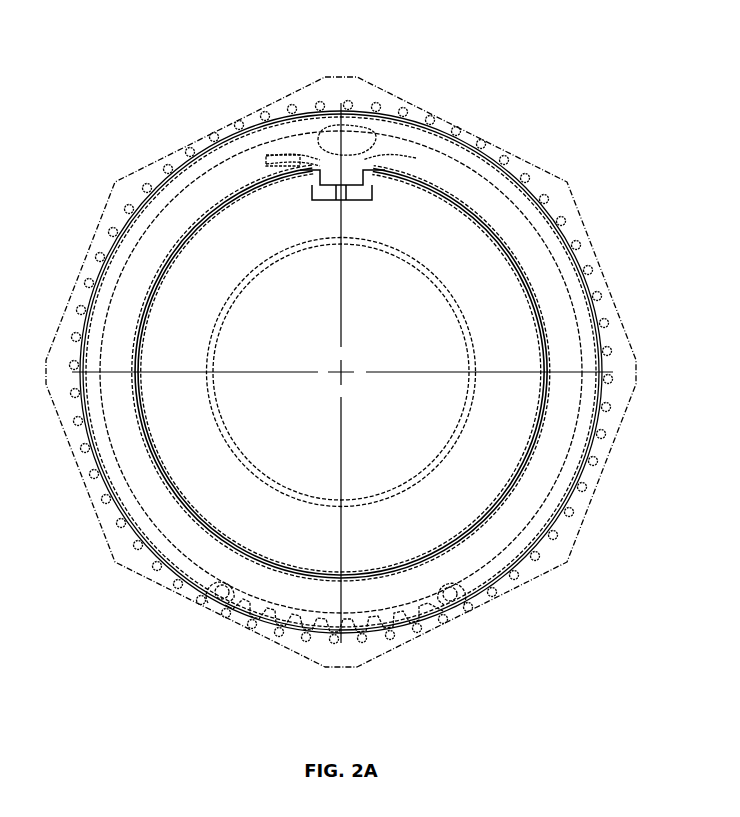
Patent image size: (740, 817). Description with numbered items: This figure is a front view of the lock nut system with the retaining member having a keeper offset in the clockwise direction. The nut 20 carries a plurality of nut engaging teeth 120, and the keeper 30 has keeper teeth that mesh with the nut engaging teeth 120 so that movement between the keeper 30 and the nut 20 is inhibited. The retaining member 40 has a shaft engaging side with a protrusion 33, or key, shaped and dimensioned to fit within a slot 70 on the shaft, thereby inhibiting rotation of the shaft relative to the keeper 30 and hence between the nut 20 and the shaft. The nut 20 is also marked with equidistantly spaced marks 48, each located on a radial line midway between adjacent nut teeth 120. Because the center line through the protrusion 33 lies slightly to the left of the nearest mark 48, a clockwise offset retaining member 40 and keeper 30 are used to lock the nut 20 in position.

The nut 20 is at (546, 156).
The keeper 30 is at (412, 152).
The protrusion 33 is at (361, 160).
The retaining member 40 is at (550, 219).
The marks 48 is at (346, 91).
The slot 70 is at (303, 190).
The nut engaging teeth 120 is at (254, 121).